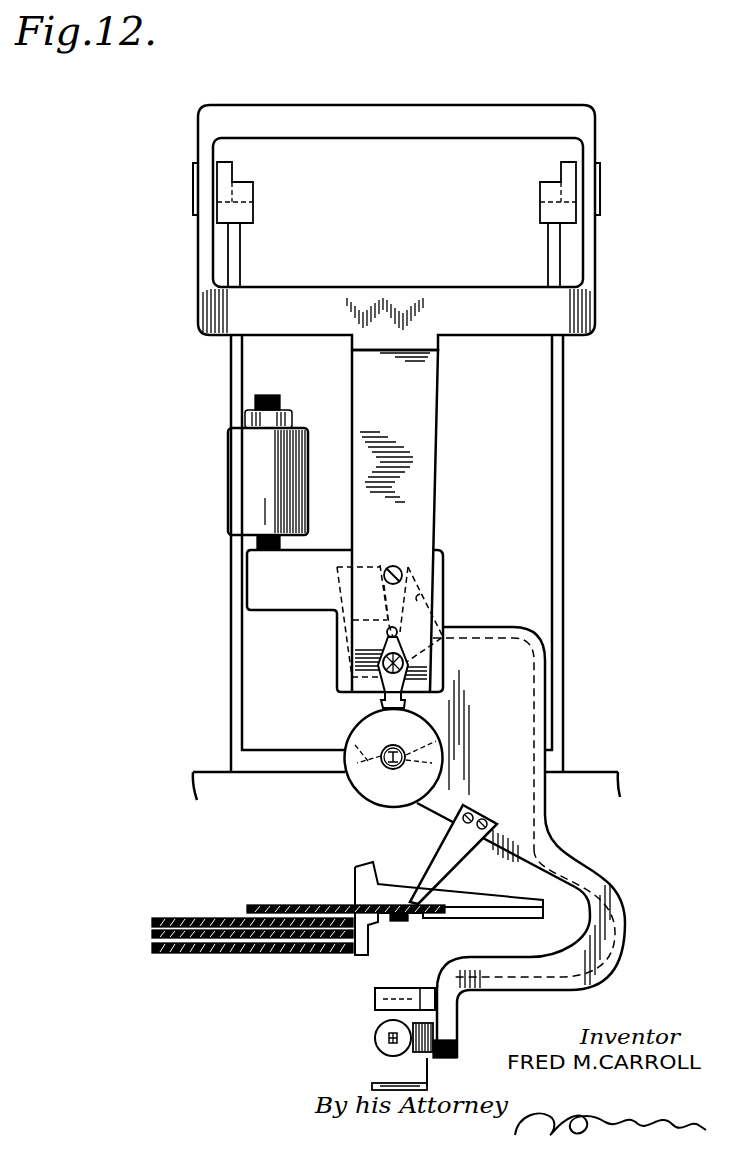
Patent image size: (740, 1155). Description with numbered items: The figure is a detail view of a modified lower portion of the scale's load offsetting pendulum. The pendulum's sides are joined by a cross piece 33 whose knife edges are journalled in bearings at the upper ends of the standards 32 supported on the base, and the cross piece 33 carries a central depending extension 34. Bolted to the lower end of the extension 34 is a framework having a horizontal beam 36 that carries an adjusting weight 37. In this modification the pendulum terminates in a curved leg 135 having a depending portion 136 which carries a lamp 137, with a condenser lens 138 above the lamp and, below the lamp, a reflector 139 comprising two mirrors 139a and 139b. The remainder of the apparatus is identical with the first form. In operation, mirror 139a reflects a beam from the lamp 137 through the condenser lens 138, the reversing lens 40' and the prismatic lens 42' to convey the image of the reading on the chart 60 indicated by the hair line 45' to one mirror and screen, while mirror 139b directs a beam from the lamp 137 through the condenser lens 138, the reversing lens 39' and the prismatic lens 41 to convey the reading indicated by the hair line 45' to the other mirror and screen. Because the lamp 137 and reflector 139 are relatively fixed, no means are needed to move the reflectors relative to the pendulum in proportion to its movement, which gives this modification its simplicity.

The standards 32 is at (233, 368).
The cross piece 33 is at (450, 310).
The central depending extension 34 is at (427, 477).
The horizontal beam 36 is at (345, 621).
The adjusting weight 37 is at (268, 472).
The reversing lens 39' is at (496, 757).
The reversing lens 40' is at (367, 717).
The triangular prismatic lens 41 is at (420, 597).
The triangular prismatic lens 42' is at (353, 621).
The hair line 45' is at (440, 854).
The chart 60 is at (303, 905).
The curved leg 135 is at (603, 922).
The depending portion 136 is at (447, 1030).
The lamp 137 is at (375, 1037).
The condenser lens 138 is at (375, 1000).
The reflector 139 is at (372, 1090).
The mirror 139a is at (428, 1088).
The mirror 139b is at (390, 1084).